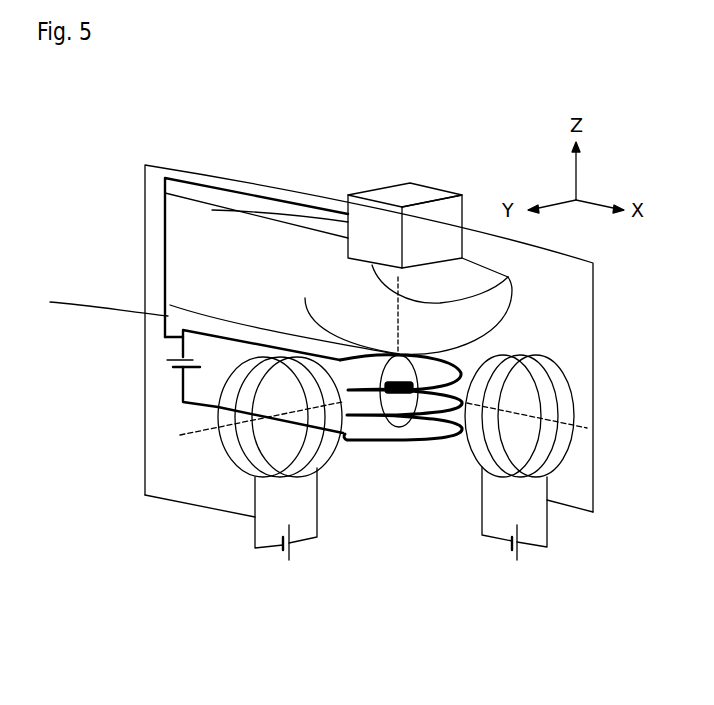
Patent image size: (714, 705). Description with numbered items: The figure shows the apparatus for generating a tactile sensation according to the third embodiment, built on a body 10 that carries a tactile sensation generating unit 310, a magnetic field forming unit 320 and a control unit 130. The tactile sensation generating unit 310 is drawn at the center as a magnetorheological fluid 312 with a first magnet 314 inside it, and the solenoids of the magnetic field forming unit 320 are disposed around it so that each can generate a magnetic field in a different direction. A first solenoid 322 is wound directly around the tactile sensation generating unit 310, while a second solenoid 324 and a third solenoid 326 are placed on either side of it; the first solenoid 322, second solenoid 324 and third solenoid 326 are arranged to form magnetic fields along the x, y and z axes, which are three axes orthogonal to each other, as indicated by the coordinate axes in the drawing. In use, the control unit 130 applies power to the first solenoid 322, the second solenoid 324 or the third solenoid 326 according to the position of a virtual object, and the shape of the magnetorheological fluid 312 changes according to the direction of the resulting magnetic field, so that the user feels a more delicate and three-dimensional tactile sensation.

The body 10 is at (168, 193).
The control unit 130 is at (416, 192).
The tactile sensation generating unit 310 is at (383, 479).
The magnetorheological fluid 312 is at (378, 424).
The first magnet 314 is at (413, 419).
The magnetic field forming unit 320 is at (398, 511).
The first solenoid 322 is at (446, 432).
The second solenoid 324 is at (527, 488).
The third solenoid 326 is at (232, 467).